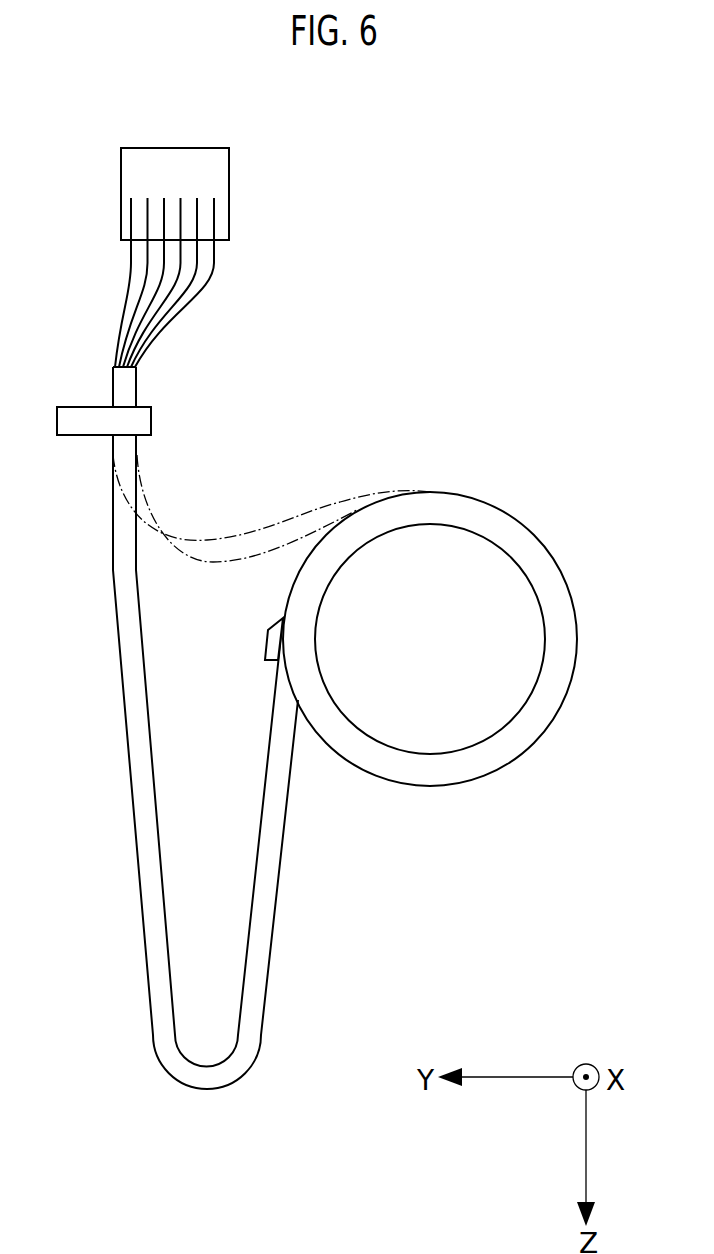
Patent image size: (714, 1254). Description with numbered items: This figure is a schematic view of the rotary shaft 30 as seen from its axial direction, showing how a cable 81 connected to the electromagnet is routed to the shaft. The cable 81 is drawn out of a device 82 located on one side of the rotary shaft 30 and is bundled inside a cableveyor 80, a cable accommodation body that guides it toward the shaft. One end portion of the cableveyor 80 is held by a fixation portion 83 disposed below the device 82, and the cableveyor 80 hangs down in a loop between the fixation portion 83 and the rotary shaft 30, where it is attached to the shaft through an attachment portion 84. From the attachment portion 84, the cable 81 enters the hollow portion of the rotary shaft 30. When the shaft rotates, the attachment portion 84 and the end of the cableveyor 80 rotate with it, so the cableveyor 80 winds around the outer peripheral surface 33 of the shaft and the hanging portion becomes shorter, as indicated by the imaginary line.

The rotary shaft 30 is at (386, 550).
The outer ring portion 33 is at (572, 595).
The cableveyor 80 is at (120, 653).
The cable 81 is at (130, 263).
The device 82 is at (229, 172).
The fixation portion 83 is at (75, 423).
The attachment portion 84 is at (267, 630).